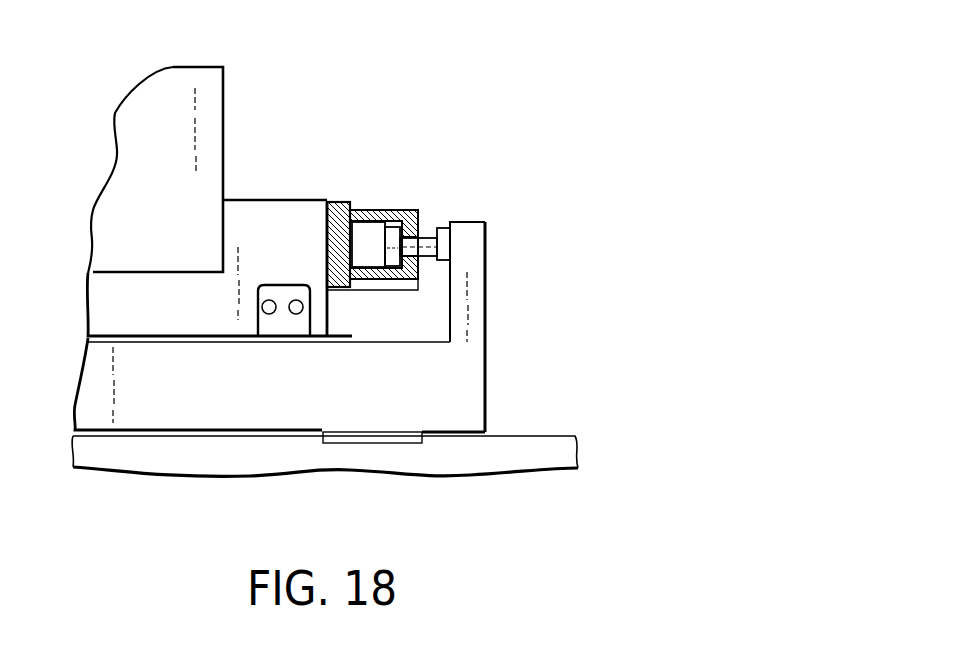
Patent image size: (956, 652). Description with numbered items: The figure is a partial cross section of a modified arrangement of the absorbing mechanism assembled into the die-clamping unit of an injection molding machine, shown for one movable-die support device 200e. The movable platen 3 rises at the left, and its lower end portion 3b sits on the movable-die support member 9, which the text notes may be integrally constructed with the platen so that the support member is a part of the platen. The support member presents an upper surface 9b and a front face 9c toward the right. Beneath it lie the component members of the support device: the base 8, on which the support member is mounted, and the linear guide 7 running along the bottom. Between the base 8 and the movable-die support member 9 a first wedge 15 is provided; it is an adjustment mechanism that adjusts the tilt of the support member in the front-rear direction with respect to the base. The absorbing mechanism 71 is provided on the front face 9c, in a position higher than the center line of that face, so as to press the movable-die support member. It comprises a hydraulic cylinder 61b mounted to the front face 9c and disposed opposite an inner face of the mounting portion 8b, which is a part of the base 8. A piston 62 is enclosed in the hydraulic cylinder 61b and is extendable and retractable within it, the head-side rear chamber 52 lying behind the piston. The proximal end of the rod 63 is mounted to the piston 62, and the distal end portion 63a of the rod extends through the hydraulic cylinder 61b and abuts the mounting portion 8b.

The movable platen 3 is at (133, 157).
The lower end portion of the movable platen 3b is at (100, 257).
The movable-die support member 9 is at (100, 302).
The upper surface of base body 9b is at (258, 200).
The front face of the movable-die support member 9c is at (333, 312).
The first wedge 15 is at (283, 327).
The hydraulic cylinder 61b is at (334, 202).
The piston 62 is at (393, 226).
The rear chamber 52 is at (370, 247).
The rod 63 is at (434, 257).
The distal end portion of the rod 63a is at (443, 236).
The mounting portion 8b is at (467, 228).
The base 8 is at (453, 407).
The linear guide 7 is at (550, 436).
The absorbing mechanism 71 is at (400, 103).
The movable-die support device 200e is at (553, 80).